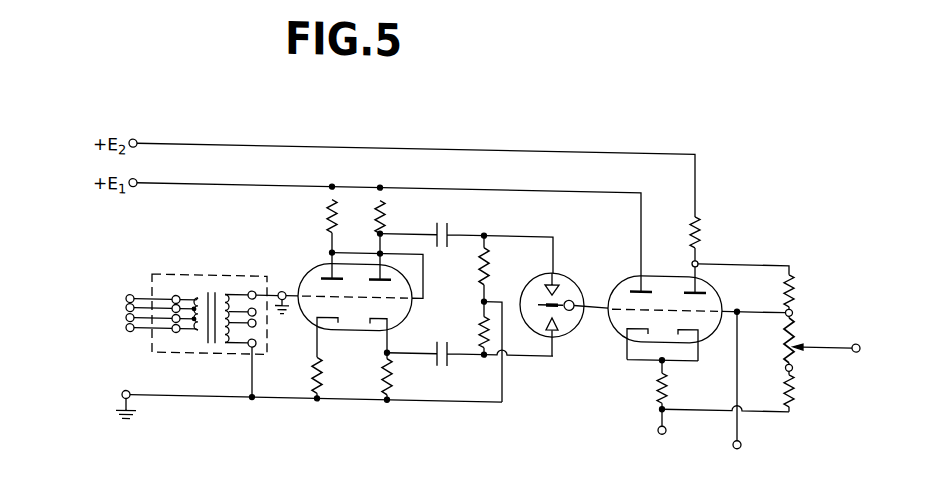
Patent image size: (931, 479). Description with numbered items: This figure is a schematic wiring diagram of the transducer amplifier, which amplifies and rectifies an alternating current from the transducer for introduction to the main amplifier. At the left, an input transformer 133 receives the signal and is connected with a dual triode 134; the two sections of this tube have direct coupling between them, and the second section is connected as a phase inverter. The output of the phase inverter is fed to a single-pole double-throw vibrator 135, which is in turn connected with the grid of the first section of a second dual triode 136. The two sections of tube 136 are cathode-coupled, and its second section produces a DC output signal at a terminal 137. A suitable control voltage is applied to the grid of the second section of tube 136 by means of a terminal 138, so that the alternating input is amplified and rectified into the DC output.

The input transformer 133 is at (191, 271).
The dual triode 134 is at (370, 320).
The single-pole double-throw vibrator 135 is at (567, 268).
The dual triode 136 is at (608, 313).
The terminal 137 is at (856, 336).
The terminal 138 is at (741, 430).